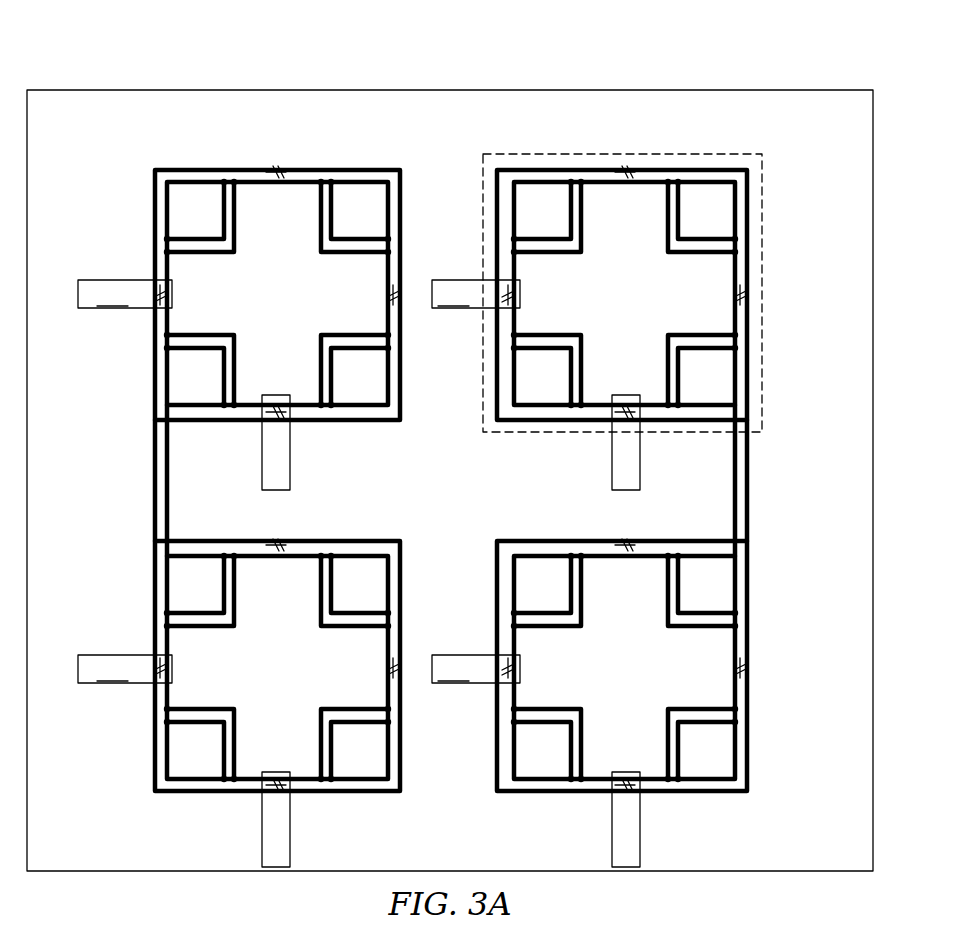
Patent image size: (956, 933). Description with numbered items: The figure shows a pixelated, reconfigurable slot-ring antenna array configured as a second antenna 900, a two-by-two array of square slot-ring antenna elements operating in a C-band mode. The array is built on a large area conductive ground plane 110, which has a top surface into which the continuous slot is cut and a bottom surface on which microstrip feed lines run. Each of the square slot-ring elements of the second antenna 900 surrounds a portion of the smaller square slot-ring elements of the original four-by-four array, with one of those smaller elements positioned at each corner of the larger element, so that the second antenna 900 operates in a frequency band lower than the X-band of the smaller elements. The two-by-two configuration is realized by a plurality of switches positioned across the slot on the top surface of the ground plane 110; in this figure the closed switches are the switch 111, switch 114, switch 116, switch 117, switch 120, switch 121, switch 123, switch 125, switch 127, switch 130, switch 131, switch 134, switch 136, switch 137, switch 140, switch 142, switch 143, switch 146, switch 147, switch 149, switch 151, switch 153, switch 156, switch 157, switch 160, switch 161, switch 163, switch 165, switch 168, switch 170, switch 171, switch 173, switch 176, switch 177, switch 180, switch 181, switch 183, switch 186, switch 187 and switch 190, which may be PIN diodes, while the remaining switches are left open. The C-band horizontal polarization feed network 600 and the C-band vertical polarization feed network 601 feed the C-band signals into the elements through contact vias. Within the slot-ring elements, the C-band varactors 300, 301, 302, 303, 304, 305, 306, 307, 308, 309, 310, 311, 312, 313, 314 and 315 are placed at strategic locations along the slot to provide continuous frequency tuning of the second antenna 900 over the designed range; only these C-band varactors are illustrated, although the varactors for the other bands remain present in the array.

The second antenna 900 is at (184, 42).
The conductive ground plane 110 is at (350, 88).
The switch 111 is at (222, 180).
The switch 114 is at (334, 180).
The switch 116 is at (399, 168).
The switch 117 is at (390, 250).
The switch 120 is at (389, 340).
The switch 121 is at (323, 405).
The switch 123 is at (230, 410).
The switch 125 is at (166, 347).
The switch 127 is at (155, 424).
The switch 130 is at (166, 242).
The switch 131 is at (498, 168).
The switch 134 is at (580, 184).
The switch 136 is at (679, 180).
The switch 137 is at (736, 246).
The switch 140 is at (736, 340).
The switch 142 is at (746, 432).
The switch 143 is at (665, 412).
The switch 146 is at (583, 398).
The switch 147 is at (515, 346).
The switch 149 is at (515, 246).
The switch 151 is at (746, 540).
The switch 153 is at (736, 620).
The switch 156 is at (736, 712).
The switch 157 is at (680, 782).
The switch 160 is at (579, 777).
The switch 161 is at (497, 783).
The switch 163 is at (515, 712).
The switch 165 is at (515, 620).
The switch 168 is at (583, 556).
The switch 170 is at (668, 564).
The switch 171 is at (400, 785).
The switch 173 is at (320, 777).
The switch 176 is at (222, 782).
The switch 177 is at (166, 712).
The switch 180 is at (166, 620).
The switch 181 is at (155, 540).
The switch 183 is at (233, 556).
The switch 186 is at (323, 564).
The switch 187 is at (389, 620).
The switch 190 is at (389, 712).
The C-band varactor 300 is at (275, 166).
The C-band varactor 301 is at (625, 166).
The C-band varactor 302 is at (735, 295).
The C-band varactor 303 is at (612, 415).
The C-band varactor 304 is at (520, 292).
The C-band varactor 305 is at (389, 295).
The C-band varactor 306 is at (275, 415).
The C-band varactor 307 is at (173, 292).
The C-band varactor 308 is at (620, 542).
The C-band varactor 309 is at (742, 668).
The C-band varactor 310 is at (620, 783).
The C-band varactor 311 is at (520, 665).
The C-band varactor 312 is at (275, 542).
The C-band varactor 313 is at (389, 668).
The C-band varactor 314 is at (290, 783).
The C-band varactor 315 is at (173, 665).
The C-band horizontal polarization feed network 600 is at (299, 481).
The C-band vertical polarization feed network 601 is at (262, 476).